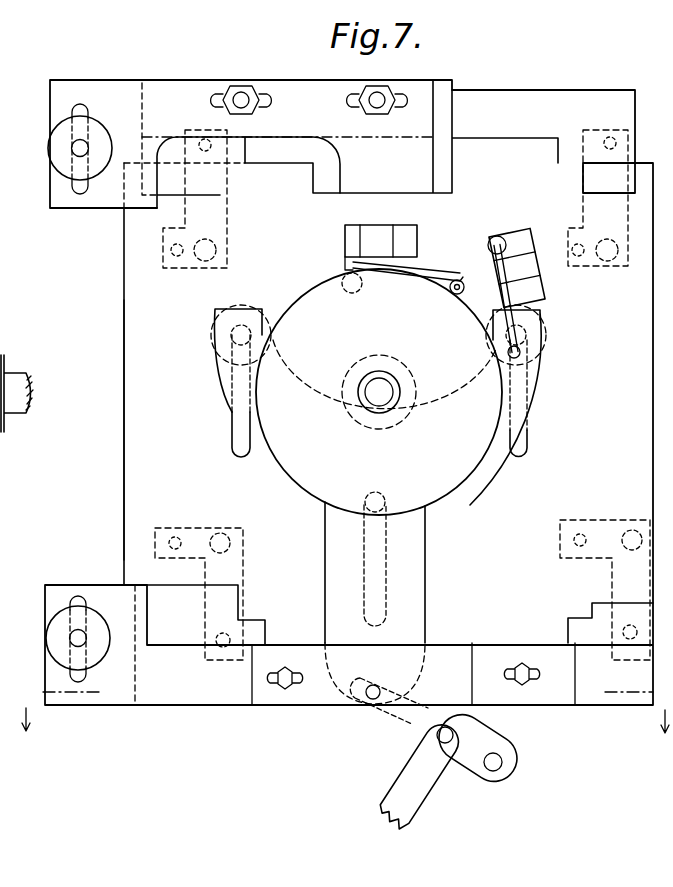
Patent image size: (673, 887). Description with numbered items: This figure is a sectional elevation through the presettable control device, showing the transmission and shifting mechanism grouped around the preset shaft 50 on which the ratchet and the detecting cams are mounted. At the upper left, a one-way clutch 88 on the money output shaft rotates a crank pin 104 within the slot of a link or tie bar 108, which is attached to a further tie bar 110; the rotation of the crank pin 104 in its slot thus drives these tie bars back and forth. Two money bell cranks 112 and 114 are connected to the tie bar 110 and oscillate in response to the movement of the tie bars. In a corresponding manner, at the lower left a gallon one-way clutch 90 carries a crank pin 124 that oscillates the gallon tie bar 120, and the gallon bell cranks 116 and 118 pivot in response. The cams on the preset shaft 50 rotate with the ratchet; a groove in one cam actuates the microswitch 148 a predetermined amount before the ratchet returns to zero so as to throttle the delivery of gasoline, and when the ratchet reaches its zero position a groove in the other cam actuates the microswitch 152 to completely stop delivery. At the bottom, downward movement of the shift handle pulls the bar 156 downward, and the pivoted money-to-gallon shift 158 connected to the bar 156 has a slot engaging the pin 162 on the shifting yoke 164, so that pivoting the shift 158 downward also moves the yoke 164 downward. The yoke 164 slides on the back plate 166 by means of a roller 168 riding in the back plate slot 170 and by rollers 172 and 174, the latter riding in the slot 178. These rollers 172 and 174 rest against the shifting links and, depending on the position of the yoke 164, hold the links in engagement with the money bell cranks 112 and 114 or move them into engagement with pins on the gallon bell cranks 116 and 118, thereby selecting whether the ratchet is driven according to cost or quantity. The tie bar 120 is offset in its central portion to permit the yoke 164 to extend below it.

The preset shaft 50 is at (395, 390).
The one-way clutch 88 is at (56, 140).
The gallon one-way clutch 90 is at (56, 626).
The crank pin 104 is at (66, 122).
The link or tie bar 108 is at (100, 80).
The tie bar 110 is at (606, 90).
The bell crank 112 is at (600, 212).
The bell crank 114 is at (218, 224).
The gallon bell crank 116 is at (612, 587).
The gallon bell crank 118 is at (244, 593).
The tie bar 120 is at (72, 638).
The crank pin 124 is at (88, 618).
The microswitch 148 is at (522, 238).
The microswitch 152 is at (412, 236).
The bar 156 is at (385, 775).
The money-to-gallon shift 158 is at (502, 746).
The pin 162 is at (368, 706).
The shifting yoke 164 is at (540, 316).
The back plate 166 is at (124, 488).
The roller 168 is at (386, 498).
The back plate slot 170 is at (392, 553).
The roller 172 is at (548, 346).
The roller 174 is at (218, 342).
The slot 178 is at (240, 440).